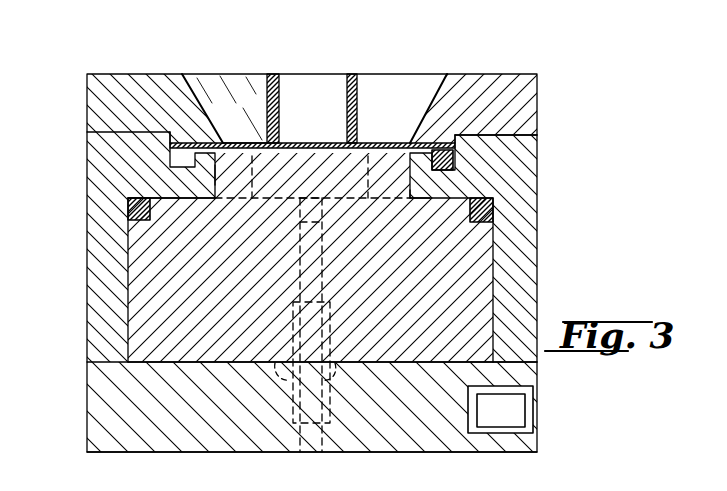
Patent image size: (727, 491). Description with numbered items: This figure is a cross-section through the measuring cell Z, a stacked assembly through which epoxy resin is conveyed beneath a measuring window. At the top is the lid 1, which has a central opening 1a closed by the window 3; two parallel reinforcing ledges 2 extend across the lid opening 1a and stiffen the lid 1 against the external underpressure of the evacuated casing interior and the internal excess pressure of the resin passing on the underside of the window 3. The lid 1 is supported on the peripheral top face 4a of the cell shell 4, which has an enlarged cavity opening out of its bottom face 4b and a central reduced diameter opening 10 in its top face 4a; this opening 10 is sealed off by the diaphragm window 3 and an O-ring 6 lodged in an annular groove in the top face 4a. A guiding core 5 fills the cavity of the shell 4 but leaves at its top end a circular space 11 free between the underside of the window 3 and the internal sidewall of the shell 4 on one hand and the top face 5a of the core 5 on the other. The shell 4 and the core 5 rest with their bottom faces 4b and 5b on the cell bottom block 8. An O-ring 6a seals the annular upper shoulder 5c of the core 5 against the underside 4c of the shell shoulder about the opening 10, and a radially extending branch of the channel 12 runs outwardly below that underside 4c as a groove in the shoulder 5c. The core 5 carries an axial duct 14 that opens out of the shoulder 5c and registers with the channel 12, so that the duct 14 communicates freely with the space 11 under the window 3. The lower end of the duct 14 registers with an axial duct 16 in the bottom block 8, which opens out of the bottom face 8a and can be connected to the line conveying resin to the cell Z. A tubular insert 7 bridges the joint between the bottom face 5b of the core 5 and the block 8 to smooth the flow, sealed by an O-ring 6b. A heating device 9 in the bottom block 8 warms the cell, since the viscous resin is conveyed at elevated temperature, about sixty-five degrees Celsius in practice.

The lid 1 is at (528, 91).
The central opening 1a is at (418, 100).
The reinforcing ledges 2 is at (358, 86).
The window 3 is at (308, 143).
The cell shell 4 is at (528, 250).
The peripheral top face of the cell shell 4a is at (500, 127).
The bottom face of the cell shell 4b is at (518, 364).
The underside of the annular shoulder 4c is at (180, 200).
The guiding core 5 is at (480, 295).
The top face of the guiding core 5a is at (234, 148).
The bottom face of the guiding core 5b is at (394, 372).
The annular upper shoulder of the core 5c is at (432, 195).
The O-ring 6 is at (455, 162).
The O-ring 6a is at (493, 214).
The O-ring 6b is at (288, 366).
The tubular inserts 7 is at (327, 328).
The cell bottom block 8 is at (95, 392).
The bottom face of the bottom block 8a is at (200, 450).
The heating device 9 is at (503, 420).
The central reduced diameter opening 10 is at (223, 175).
The circular space 11 is at (363, 150).
The channel 12 is at (342, 190).
The axial duct 14 is at (320, 273).
The axial duct 16 is at (313, 452).
The measuring cell Z is at (589, 86).